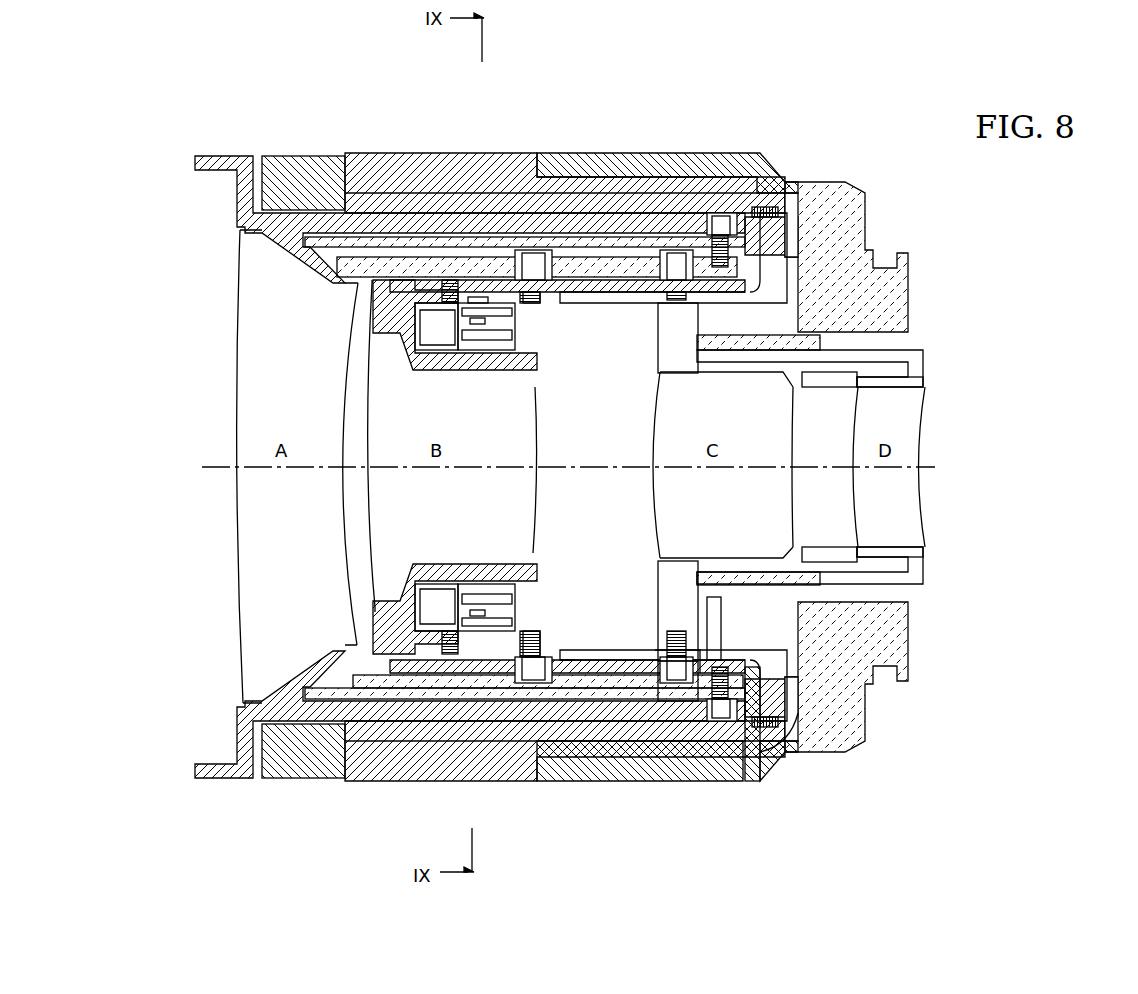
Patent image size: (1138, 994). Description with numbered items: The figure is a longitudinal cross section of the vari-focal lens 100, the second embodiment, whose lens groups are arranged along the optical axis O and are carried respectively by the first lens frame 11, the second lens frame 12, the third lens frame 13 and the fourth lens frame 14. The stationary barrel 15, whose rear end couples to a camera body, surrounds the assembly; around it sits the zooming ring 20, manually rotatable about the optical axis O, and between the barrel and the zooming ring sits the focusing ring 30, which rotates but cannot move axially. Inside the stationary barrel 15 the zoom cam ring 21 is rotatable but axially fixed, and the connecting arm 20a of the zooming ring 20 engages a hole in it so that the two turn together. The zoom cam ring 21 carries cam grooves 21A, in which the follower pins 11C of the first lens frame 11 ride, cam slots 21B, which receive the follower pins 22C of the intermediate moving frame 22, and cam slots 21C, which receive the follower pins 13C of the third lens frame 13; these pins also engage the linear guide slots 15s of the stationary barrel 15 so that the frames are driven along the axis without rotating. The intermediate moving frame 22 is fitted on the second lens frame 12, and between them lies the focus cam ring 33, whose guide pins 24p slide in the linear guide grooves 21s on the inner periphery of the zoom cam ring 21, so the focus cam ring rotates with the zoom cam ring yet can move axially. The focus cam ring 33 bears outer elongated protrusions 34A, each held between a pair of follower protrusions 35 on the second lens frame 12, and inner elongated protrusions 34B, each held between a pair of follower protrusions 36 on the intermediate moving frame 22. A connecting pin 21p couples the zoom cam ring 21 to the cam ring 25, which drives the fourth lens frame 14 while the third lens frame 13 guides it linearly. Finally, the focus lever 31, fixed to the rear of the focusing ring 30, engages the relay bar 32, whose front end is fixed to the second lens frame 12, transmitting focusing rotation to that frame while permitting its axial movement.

The vari-focal lens 100 is at (815, 106).
The first lens frame 11 is at (236, 158).
The follower pins 11C is at (752, 781).
The second lens frame 12 is at (450, 360).
The third lens frame 13 is at (668, 353).
The follower pins 13C is at (658, 702).
The fourth lens frame 14 is at (912, 350).
The stationary barrel 15 is at (428, 153).
The linear guide slots 15s is at (457, 240).
The zooming ring 20 is at (690, 153).
The connecting arm 20a is at (762, 713).
The zoom cam ring 21 is at (615, 268).
The cam grooves 21A is at (730, 680).
The cam slots 21B is at (552, 256).
The cam slots 21C is at (662, 683).
The connecting pin 21p is at (797, 650).
The linear guide grooves 21s is at (568, 662).
The intermediate moving frame 22 is at (523, 337).
The follower pins 22C is at (533, 262).
The guide pins 24p is at (493, 688).
The cam ring 25 is at (738, 345).
The focusing ring 30 is at (303, 155).
The focus lever 31 is at (780, 243).
The relay bar 32 is at (652, 285).
The focus cam ring 33 is at (435, 317).
The outer elongated protrusions 34A is at (478, 300).
The inner elongated protrusions 34B is at (474, 325).
The follower protrusions 35 is at (470, 308).
The follower protrusions 36 is at (472, 334).
The optical axis O is at (217, 467).